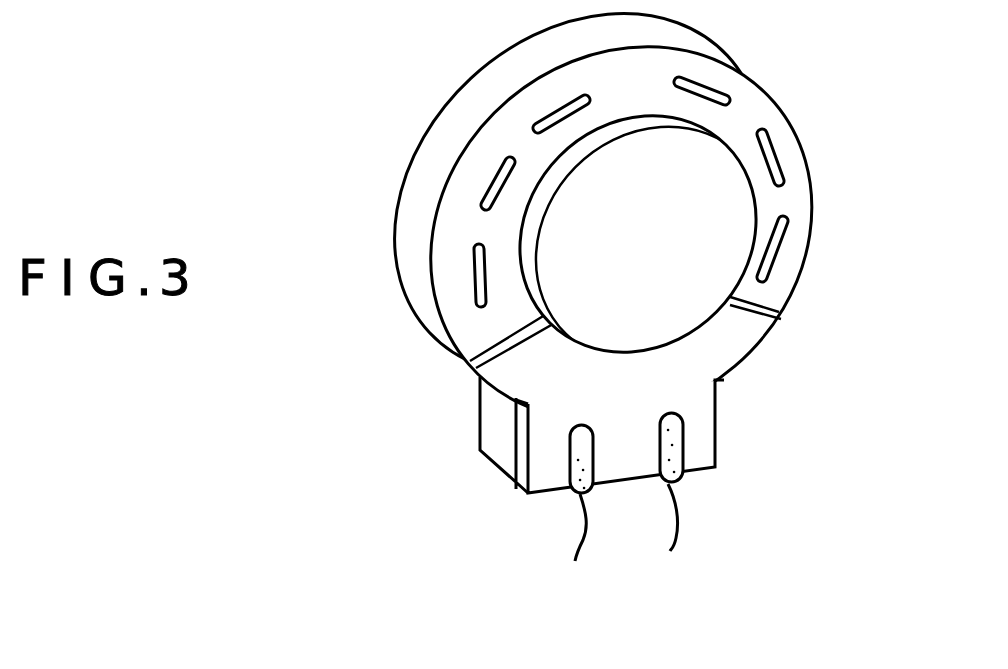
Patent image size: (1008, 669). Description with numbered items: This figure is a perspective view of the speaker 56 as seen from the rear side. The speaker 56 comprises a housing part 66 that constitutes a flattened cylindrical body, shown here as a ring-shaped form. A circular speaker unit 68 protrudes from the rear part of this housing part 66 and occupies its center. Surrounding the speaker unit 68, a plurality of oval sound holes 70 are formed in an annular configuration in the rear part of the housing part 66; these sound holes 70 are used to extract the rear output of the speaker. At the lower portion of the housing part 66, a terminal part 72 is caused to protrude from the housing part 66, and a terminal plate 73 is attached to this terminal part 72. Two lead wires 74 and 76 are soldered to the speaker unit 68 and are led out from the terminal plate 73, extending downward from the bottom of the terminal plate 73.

The speaker 56 is at (606, 306).
The housing part 66 is at (803, 133).
The speaker unit 68 is at (742, 224).
The sound holes 70 is at (545, 114).
The terminal part 72 is at (503, 452).
The terminal plate 73 is at (707, 443).
The lead wire 74 is at (571, 535).
The lead wire 76 is at (667, 548).